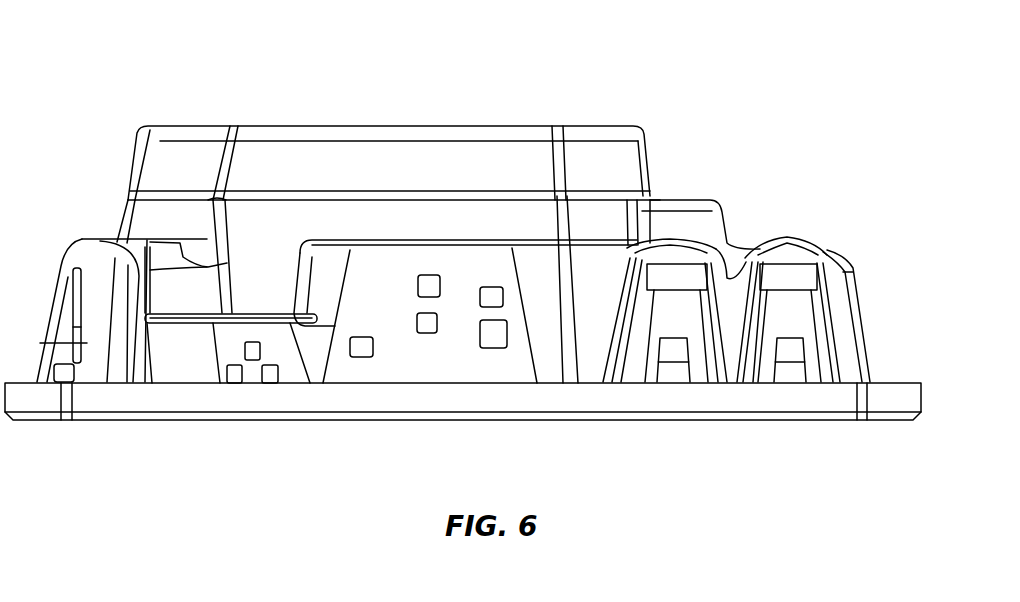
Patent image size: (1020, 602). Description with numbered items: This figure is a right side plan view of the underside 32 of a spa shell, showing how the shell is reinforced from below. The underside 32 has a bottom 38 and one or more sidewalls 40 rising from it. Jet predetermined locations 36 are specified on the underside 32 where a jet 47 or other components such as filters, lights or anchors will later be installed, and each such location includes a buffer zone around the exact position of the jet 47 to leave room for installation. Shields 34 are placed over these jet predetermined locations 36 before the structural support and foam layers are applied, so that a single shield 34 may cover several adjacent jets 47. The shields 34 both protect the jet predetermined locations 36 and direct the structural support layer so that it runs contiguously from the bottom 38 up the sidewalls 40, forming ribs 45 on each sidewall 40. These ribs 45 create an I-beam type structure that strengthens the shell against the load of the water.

The underside of the spa shell 32 is at (135, 77).
The shield 34 is at (420, 374).
The jet predetermined location 36 is at (451, 355).
The bottom 38 is at (600, 124).
The sidewall 40 is at (273, 227).
The rib 45 is at (147, 332).
The jet 47 is at (363, 348).